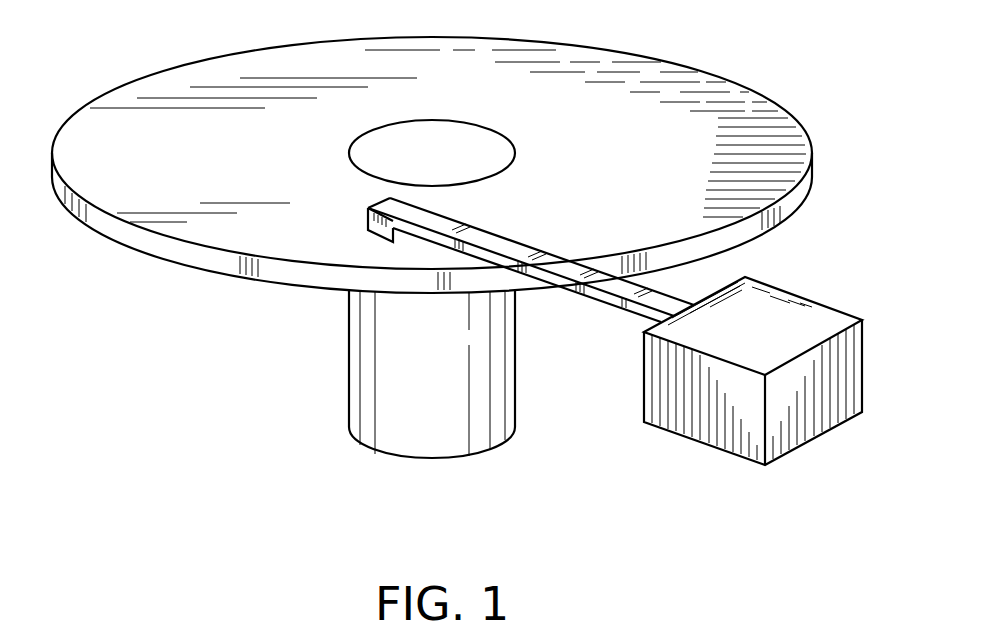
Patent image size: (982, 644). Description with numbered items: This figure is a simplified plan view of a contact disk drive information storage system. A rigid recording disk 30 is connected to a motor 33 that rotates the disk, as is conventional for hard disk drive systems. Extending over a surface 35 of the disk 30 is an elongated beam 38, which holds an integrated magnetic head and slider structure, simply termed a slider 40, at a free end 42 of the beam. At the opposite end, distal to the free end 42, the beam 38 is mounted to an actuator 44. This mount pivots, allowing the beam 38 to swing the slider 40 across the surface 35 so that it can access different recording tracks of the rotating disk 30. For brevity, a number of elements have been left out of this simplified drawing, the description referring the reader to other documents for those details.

The rigid recording disk 30 is at (698, 72).
The surface 35 is at (192, 144).
The motor 33 is at (348, 377).
The elongated beam 38 is at (527, 250).
The slider 40 is at (368, 223).
The free end 42 is at (385, 206).
The actuator 44 is at (825, 318).